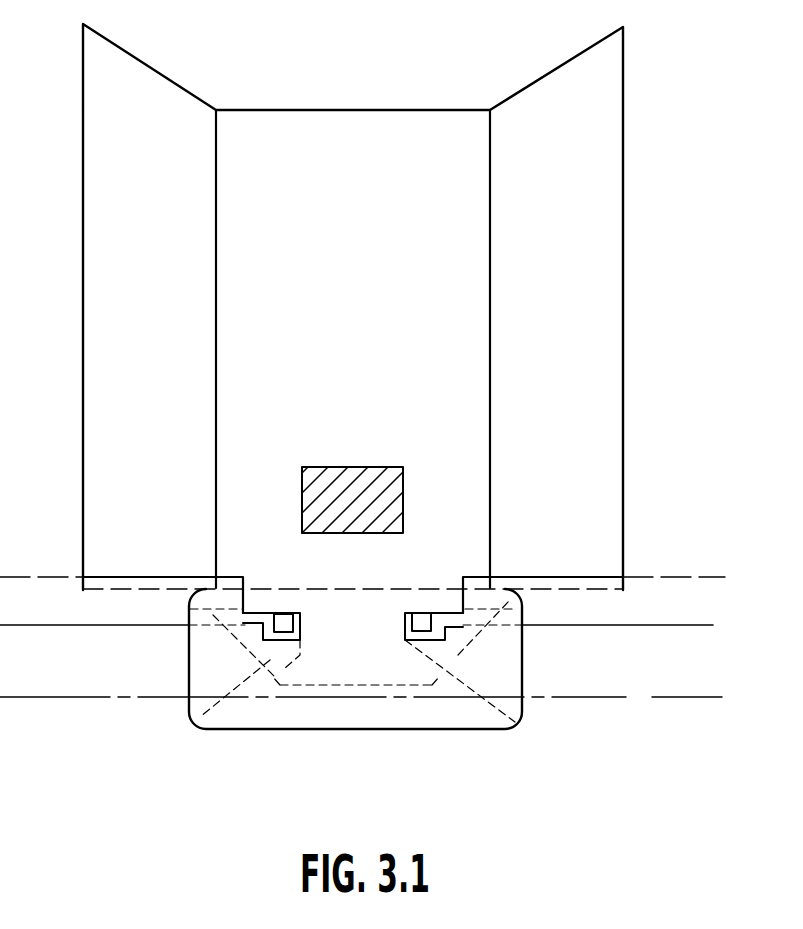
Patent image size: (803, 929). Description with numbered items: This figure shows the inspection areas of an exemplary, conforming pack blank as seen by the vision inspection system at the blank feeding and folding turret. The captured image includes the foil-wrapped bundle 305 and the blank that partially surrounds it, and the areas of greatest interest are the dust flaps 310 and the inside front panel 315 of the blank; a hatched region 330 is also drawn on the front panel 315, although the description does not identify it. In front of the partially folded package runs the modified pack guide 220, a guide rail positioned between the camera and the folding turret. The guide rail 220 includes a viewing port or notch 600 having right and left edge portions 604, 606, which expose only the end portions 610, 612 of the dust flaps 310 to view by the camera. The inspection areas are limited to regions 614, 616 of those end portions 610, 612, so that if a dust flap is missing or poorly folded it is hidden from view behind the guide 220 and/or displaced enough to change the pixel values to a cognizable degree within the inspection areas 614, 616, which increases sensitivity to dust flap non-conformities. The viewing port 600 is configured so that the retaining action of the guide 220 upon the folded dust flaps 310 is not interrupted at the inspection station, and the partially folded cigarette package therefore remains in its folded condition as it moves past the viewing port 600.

The pack guide 220 is at (645, 682).
The foil-wrapped bundle 305 is at (264, 600).
The dust flaps 310 is at (456, 675).
The inside front panel 315 is at (366, 162).
The light source 330 is at (287, 609).
The viewing port 600 is at (327, 641).
The right edge portion 604 is at (200, 593).
The left edge portion 606 is at (453, 600).
The end portion 610 is at (258, 615).
The end portion 612 is at (453, 618).
The inspection area 614 is at (284, 612).
The inspection area 616 is at (424, 612).